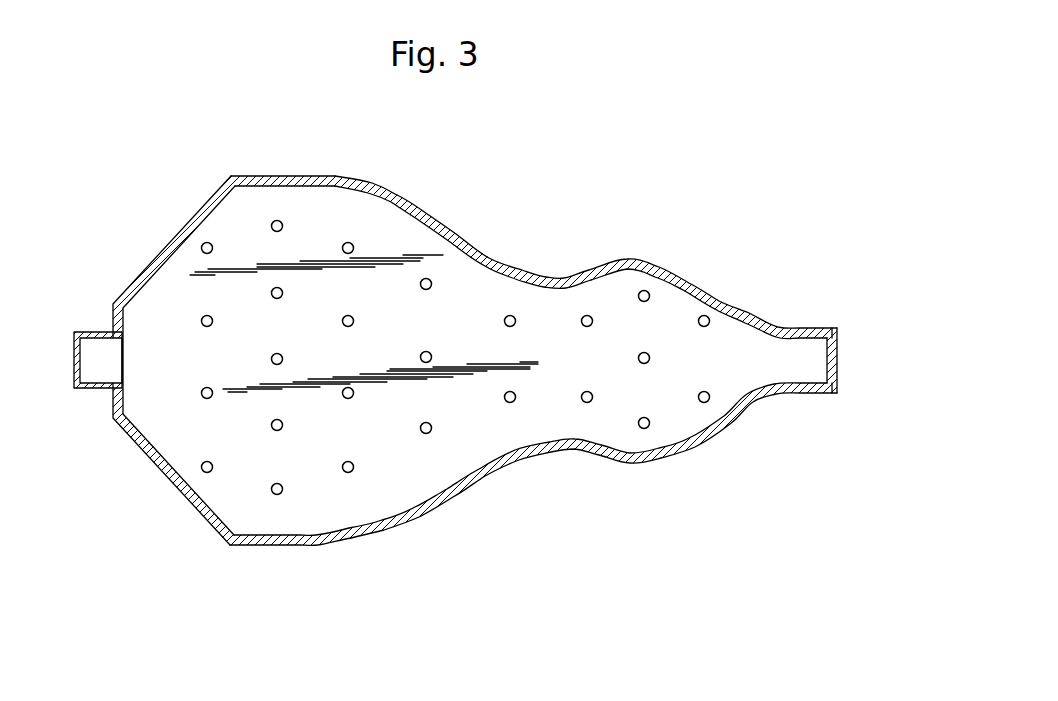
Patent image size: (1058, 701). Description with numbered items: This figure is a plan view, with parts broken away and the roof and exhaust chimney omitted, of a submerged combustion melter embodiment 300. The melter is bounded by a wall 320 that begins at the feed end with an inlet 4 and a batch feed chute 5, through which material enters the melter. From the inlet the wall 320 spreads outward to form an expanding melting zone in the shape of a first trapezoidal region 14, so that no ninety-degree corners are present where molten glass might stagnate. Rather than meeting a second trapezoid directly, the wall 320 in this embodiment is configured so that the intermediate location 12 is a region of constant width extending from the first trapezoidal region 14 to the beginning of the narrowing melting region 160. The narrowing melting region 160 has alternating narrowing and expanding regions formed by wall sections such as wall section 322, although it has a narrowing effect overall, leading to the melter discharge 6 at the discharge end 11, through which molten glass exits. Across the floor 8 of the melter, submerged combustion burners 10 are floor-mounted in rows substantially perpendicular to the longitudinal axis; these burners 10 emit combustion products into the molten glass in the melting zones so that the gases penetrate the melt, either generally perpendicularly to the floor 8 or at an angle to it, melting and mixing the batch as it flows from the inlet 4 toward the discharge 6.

The melter embodiment 300 is at (476, 344).
The intermediate location 12 is at (283, 176).
The first trapezoidal region 14 is at (180, 276).
The wall 320 is at (407, 203).
The wall section 322 is at (425, 505).
The narrowing melting region 160 is at (675, 300).
The submerged combustion burners 10 is at (429, 352).
The floor 8 is at (471, 427).
The batch feed chute 5 is at (92, 331).
The inlet 4 is at (121, 358).
The melter discharge 6 is at (840, 351).
The discharge end 11 is at (840, 380).